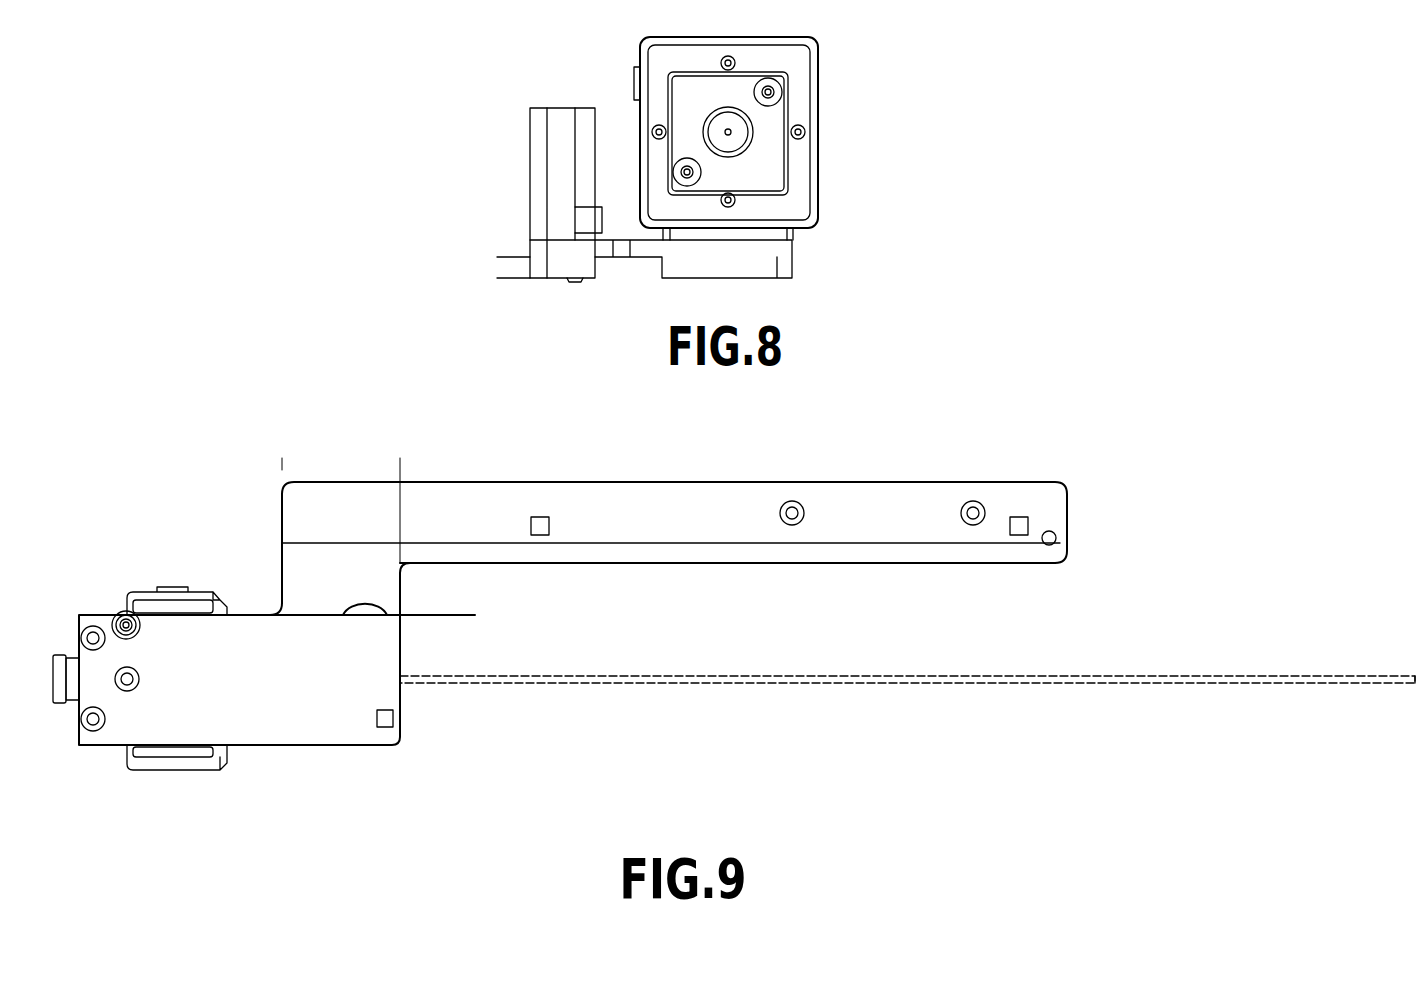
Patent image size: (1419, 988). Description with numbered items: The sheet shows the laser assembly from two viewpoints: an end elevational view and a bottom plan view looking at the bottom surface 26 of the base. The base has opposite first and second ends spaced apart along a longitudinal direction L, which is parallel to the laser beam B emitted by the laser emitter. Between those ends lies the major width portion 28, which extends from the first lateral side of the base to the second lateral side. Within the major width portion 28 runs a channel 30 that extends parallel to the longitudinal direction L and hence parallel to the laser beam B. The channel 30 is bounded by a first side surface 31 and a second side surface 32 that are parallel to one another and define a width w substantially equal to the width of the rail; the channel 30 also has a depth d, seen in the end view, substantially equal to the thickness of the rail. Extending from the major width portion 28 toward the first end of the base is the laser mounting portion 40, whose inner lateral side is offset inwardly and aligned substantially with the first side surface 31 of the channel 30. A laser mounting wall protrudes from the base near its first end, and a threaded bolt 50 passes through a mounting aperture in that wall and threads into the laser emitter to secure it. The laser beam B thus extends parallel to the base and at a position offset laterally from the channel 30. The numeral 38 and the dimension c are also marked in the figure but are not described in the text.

In FIG. 9, the bottom surface 26 is at (333, 705).
In FIG. 9, the major width portion 28 is at (282, 448).
In FIG. 9, the channel 30 is at (362, 587).
In FIG. 9, the first side surface 31 is at (343, 615).
In FIG. 9, the second side surface 32 is at (282, 543).
In FIG. 9, the plate lower edge 38 is at (712, 555).
In FIG. 9, the laser mounting portion 40 is at (246, 758).
In FIG. 9, the threaded bolt 50 is at (55, 655).
In FIG. 8, the depth d is at (508, 218).
In FIG. 9, the width w is at (315, 615).
In FIG. 9, the clearance c is at (463, 615).
In FIG. 9, the laser beam B is at (947, 678).
In FIG. 9, the longitudinal direction L is at (1130, 629).